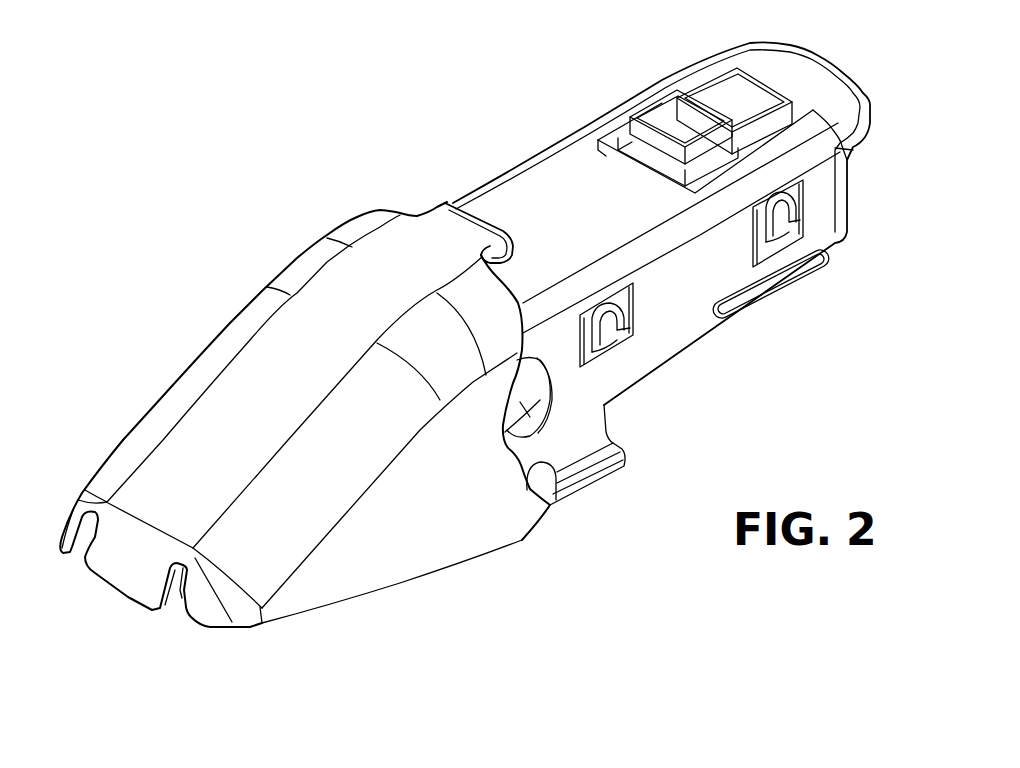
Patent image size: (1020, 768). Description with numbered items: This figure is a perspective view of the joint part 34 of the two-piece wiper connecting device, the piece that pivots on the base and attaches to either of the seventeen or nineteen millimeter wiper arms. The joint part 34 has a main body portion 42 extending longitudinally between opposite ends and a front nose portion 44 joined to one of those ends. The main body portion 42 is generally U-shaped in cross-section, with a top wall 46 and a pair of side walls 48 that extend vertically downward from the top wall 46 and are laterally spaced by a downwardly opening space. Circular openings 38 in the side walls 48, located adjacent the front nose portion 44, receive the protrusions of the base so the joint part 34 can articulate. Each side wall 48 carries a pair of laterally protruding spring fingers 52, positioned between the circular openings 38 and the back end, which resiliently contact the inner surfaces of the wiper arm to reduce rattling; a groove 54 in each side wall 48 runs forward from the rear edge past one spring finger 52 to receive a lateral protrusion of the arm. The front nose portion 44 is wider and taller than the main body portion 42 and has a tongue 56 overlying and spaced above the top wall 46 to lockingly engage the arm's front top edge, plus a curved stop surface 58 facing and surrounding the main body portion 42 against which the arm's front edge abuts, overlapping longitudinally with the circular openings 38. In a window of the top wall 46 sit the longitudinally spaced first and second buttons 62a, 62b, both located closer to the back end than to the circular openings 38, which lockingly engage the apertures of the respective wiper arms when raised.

The joint part 34 is at (130, 628).
The circular openings 38 is at (520, 402).
The main body portion 42 is at (500, 167).
The front nose portion 44 is at (153, 407).
The top wall 46 is at (540, 193).
The side walls 48 is at (673, 293).
The spring fingers 52 is at (615, 328).
The groove 54 is at (763, 285).
The tongue 56 is at (442, 222).
The stop surface 58 is at (548, 500).
The first button 62a is at (650, 117).
The second button 62b is at (757, 90).